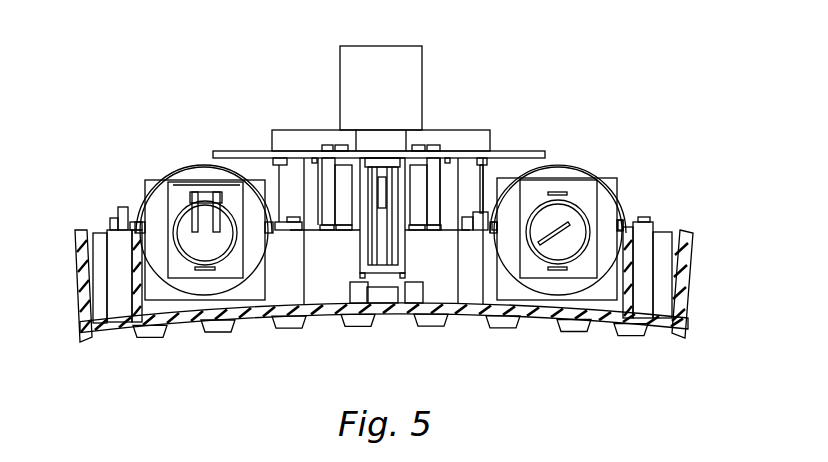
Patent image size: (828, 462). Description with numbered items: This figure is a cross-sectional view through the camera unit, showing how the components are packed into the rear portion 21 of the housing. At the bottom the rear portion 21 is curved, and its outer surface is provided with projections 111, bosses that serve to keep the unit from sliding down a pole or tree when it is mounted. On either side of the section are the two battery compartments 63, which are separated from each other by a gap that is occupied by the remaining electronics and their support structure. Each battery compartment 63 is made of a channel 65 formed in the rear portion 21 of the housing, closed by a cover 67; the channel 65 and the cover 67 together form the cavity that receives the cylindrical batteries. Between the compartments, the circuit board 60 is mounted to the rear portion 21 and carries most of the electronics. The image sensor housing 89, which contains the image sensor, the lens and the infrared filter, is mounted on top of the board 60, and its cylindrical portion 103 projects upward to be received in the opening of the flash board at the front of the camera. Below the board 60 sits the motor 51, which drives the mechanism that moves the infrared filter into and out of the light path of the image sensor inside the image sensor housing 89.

The rear portion 21 is at (692, 288).
The motor 51 is at (393, 262).
The circuit board 60 is at (240, 151).
The battery compartment 63 is at (157, 214).
The channel 65 is at (200, 295).
The cover 67 is at (182, 171).
The image sensor housing 89 is at (466, 130).
The cylindrical portion 103 is at (355, 72).
The projections 111 is at (222, 340).